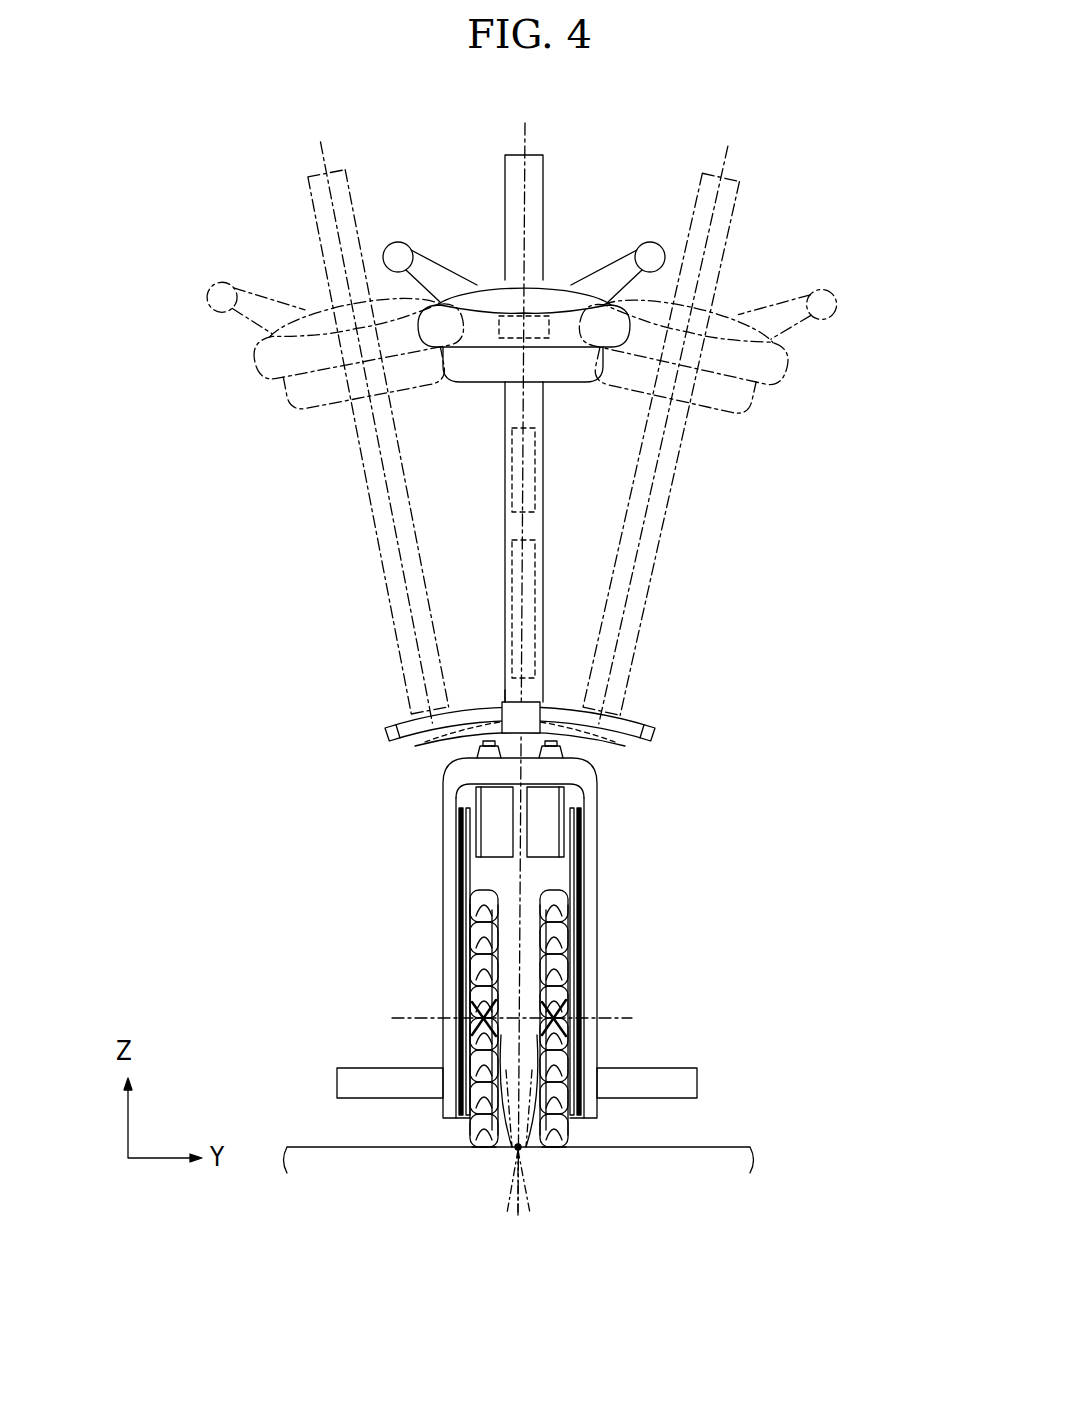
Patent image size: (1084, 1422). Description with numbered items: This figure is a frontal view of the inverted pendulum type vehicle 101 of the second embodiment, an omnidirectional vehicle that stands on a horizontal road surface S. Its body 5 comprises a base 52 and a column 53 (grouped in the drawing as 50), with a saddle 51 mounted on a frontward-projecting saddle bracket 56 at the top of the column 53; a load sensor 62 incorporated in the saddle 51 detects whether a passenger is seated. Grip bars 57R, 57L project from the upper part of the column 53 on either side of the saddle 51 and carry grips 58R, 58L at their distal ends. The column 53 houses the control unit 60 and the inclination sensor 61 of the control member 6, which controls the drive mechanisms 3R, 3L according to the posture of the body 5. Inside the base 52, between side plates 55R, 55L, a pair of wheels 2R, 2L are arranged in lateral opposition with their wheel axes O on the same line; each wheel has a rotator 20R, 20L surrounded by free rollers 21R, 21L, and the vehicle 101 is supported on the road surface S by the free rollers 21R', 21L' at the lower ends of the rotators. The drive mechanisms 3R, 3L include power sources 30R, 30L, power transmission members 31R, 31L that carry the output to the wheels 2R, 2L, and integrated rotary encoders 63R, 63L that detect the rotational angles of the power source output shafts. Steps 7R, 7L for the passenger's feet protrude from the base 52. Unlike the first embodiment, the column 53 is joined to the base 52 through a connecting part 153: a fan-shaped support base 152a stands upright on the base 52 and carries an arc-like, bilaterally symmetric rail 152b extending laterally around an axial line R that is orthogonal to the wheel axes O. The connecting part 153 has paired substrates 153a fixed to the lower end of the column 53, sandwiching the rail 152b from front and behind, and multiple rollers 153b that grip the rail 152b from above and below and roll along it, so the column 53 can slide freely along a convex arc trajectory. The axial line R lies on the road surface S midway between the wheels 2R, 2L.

The vehicle 101 is at (230, 169).
The saddle 51 is at (555, 281).
The saddle bracket 56 is at (605, 363).
The load sensor 62 is at (499, 331).
The grip bar 57R is at (438, 277).
The grip bar 57L is at (608, 277).
The grip 58R is at (385, 258).
The grip 58L is at (665, 257).
The column 53 is at (543, 530).
The inclination sensor 61 is at (512, 472).
The control unit 60 is at (512, 563).
The steering unit 50 is at (792, 505).
The control member 6 is at (230, 393).
The base 52 is at (570, 776).
The rail 152b is at (655, 738).
The support base 152a is at (622, 750).
The connecting part 153 is at (529, 693).
The substrates 153a is at (506, 692).
The rollers 153b is at (560, 722).
The drive mechanism 3R is at (481, 773).
The drive mechanism 3L is at (587, 753).
The body 5 is at (604, 808).
The side plate 55R is at (443, 897).
The side plate 55L is at (597, 897).
The power transmission member 31R is at (462, 852).
The power transmission member 31L is at (580, 852).
The power source 30R is at (505, 843).
The power source 30L is at (555, 845).
The rotary encoder 63R is at (446, 772).
The rotary encoder 63L is at (452, 800).
The free rollers 21R is at (408, 1018).
The free rollers 21L is at (627, 1018).
The wheel axes O is at (630, 1015).
The step 7R is at (340, 1083).
The step 7L is at (690, 1083).
The road surface S is at (667, 1147).
The rotator 20R is at (497, 1150).
The rotator 20L is at (540, 1150).
The axial line R is at (517, 1152).
The free roller 21R' is at (431, 1183).
The free roller 21L' is at (601, 1183).
The wheel 2R is at (478, 1160).
The wheel 2L is at (557, 1160).